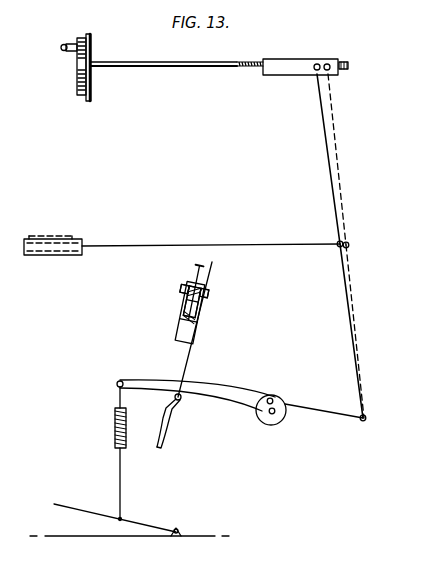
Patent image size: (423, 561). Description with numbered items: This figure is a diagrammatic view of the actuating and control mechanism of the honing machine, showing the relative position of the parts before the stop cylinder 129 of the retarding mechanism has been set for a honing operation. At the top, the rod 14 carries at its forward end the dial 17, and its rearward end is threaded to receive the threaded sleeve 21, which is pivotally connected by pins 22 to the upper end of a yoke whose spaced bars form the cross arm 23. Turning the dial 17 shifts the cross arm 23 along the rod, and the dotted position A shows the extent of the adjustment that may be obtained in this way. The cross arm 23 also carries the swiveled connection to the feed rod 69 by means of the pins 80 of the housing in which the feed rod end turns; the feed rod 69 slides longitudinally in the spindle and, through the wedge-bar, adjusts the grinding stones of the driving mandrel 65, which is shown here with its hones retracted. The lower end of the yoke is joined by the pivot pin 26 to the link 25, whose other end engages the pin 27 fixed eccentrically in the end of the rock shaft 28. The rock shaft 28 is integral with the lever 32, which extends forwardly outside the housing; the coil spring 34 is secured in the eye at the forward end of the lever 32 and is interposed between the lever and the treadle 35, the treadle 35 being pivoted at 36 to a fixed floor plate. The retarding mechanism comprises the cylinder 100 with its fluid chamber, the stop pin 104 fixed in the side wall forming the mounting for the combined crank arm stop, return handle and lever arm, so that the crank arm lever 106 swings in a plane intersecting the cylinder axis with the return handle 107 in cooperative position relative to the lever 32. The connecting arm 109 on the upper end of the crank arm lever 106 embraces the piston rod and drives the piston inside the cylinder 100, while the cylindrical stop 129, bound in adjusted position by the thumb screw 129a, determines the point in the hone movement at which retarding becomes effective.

The dial 17 is at (86, 38).
The rod 14 is at (178, 67).
The threaded sleeve 21 is at (290, 62).
The pins 22 is at (322, 64).
The bar 23 is at (328, 182).
The shifted position of the cross arm A is at (337, 128).
The pin 80 is at (338, 249).
The feed rod 69 is at (260, 246).
The driving mandrel 65 is at (54, 257).
The pivot pin 26 is at (376, 428).
The link 25 is at (320, 412).
The rock shaft 28 is at (267, 425).
The pin 27 is at (273, 399).
The lever 32 is at (227, 386).
The coil spring 34 is at (114, 431).
The treadle 35 is at (77, 510).
The treadle pivot 36 is at (180, 531).
The cylinder 100 is at (178, 322).
The crank arm lever 106 is at (200, 354).
The stop pin 104 is at (182, 400).
The return handle 107 is at (165, 425).
The connecting arm 109 is at (182, 280).
The cylindrical stop 129 is at (203, 306).
The thumb screw 129a is at (182, 300).